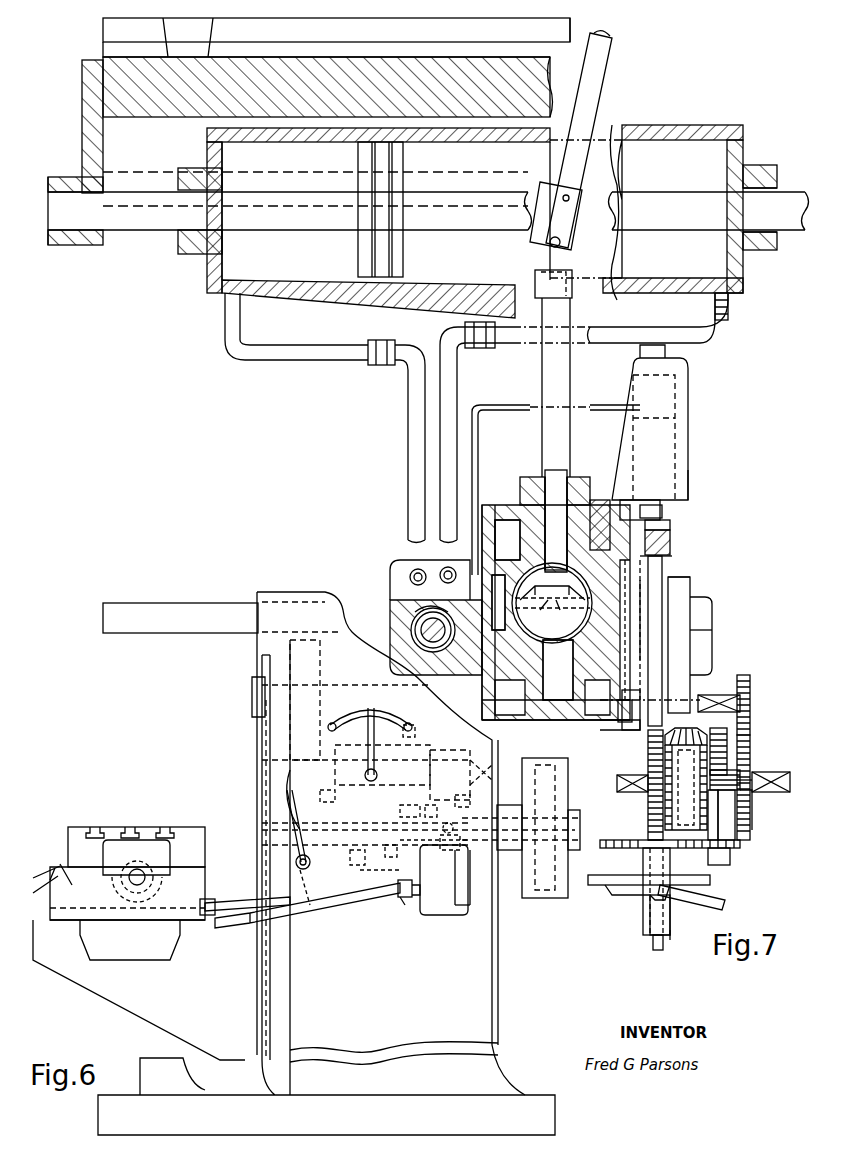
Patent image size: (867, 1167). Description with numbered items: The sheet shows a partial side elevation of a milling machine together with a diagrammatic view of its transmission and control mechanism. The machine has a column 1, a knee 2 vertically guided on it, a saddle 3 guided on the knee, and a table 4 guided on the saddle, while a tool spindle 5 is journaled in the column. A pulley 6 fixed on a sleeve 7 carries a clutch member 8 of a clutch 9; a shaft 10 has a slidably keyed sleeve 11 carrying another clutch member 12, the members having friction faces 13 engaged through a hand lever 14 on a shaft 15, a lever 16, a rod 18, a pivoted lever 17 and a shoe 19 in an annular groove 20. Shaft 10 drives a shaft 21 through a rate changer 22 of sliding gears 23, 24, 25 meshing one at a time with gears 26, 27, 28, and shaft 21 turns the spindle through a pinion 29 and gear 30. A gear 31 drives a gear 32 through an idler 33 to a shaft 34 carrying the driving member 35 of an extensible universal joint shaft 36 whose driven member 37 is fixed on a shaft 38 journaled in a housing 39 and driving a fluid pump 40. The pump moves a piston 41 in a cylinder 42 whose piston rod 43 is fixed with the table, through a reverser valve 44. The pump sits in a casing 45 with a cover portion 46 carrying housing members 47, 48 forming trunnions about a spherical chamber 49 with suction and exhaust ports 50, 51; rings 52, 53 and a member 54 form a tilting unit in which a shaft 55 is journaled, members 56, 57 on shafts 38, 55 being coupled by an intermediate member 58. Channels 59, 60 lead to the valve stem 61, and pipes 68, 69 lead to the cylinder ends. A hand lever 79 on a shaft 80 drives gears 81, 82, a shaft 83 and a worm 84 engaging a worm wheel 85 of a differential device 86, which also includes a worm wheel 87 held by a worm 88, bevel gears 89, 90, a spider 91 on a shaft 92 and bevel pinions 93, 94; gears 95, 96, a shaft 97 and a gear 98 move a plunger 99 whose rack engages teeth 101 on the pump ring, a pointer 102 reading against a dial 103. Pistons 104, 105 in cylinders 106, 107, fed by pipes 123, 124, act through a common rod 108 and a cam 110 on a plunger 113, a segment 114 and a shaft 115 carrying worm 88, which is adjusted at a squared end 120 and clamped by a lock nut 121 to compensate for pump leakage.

In FIG. 6, the column 1 is at (498, 985).
In FIG. 6, the knee 2 is at (112, 1002).
In FIG. 6, the saddle 3 is at (200, 890).
In FIG. 6, the table 4 is at (103, 30).
In FIG. 6, the tool spindle 5 is at (254, 700).
In FIG. 6, the pulley 6 is at (547, 898).
In FIG. 6, the sleeve 7 is at (534, 862).
In FIG. 6, the clutch member 8 is at (478, 800).
In FIG. 6, the clutch 9 is at (464, 770).
In FIG. 6, the shaft 10 is at (431, 845).
In FIG. 6, the sleeve 11 is at (436, 804).
In FIG. 6, the clutch member 12 is at (458, 794).
In FIG. 6, the friction faces 13 is at (489, 772).
In FIG. 6, the hand lever 14 is at (290, 803).
In FIG. 6, the shaft 15 is at (307, 829).
In FIG. 6, the lever 16 is at (305, 875).
In FIG. 6, the pivoted lever 17 is at (465, 872).
In FIG. 6, the rod 18 is at (393, 913).
In FIG. 6, the pivoted shoe 19 is at (455, 837).
In FIG. 6, the annular groove 20 is at (413, 804).
In FIG. 6, the shaft 21 is at (415, 760).
In FIG. 6, the rate changer 22 is at (345, 803).
In FIG. 6, the gear 23 is at (351, 863).
In FIG. 6, the gear 24 is at (379, 879).
In FIG. 6, the gear 25 is at (392, 857).
In FIG. 6, the gear 26 is at (370, 727).
In FIG. 6, the gear 27 is at (379, 744).
In FIG. 6, the gear 28 is at (410, 730).
In FIG. 6, the pinion 29 is at (301, 800).
In FIG. 6, the gear 30 is at (315, 668).
In FIG. 6, the gear 31 is at (432, 818).
In FIG. 6, the gear 32 is at (444, 886).
In FIG. 6, the idler 33 is at (408, 885).
In FIG. 6, the shaft 34 is at (470, 907).
In FIG. 6, the driving member 35 is at (415, 898).
In FIG. 6, the extensible universal joint shaft 36 is at (322, 913).
In FIG. 6, the driven member 37 is at (572, 280).
In FIG. 6, the shaft 38 is at (570, 370).
In FIG. 6, the housing 39 is at (58, 924).
In FIG. 6, the fluid pump 40 is at (506, 505).
In FIG. 6, the piston 41 is at (358, 252).
In FIG. 6, the cylinder 42 is at (336, 305).
In FIG. 6, the piston rod 43 is at (300, 232).
In FIG. 6, the reverser valve 44 is at (425, 610).
In FIG. 6, the casing 45 is at (480, 528).
In FIG. 6, the cover portion 46 is at (540, 480).
In FIG. 6, the pump housing member 47 is at (596, 505).
In FIG. 6, the pump housing member 48 is at (632, 698).
In FIG. 6, the spherical chamber 49 is at (557, 520).
In FIG. 6, the suction port 50 is at (640, 630).
In FIG. 6, the exhaust port 51 is at (505, 602).
In FIG. 6, the ring member 52 is at (480, 692).
In FIG. 6, the pump ring 53 is at (640, 505).
In FIG. 6, the member 54 is at (525, 686).
In FIG. 6, the shaft 55 is at (548, 700).
In FIG. 6, the member 56 is at (552, 602).
In FIG. 6, the member 57 is at (539, 618).
In FIG. 6, the intermediate member 58 is at (562, 618).
In FIG. 6, the channel 59 is at (647, 620).
In FIG. 6, the channel 60 is at (470, 672).
In FIG. 6, the valve stem 61 is at (415, 625).
In FIG. 6, the pipe 68 is at (702, 345).
In FIG. 6, the pipe 69 is at (282, 362).
In FIG. 7, the hand lever 79 is at (700, 905).
In FIG. 7, the shaft 80 is at (650, 920).
In FIG. 7, the gear 81 is at (630, 848).
In FIG. 7, the gear 82 is at (676, 848).
In FIG. 7, the shaft 83 is at (724, 866).
In FIG. 7, the worm 84 is at (752, 760).
In FIG. 7, the worm wheel 85 is at (735, 772).
In FIG. 7, the differential device 86 is at (752, 822).
In FIG. 7, the worm wheel 87 is at (648, 810).
In FIG. 7, the worm 88 is at (620, 782).
In FIG. 7, the bevel gear 89 is at (648, 750).
In FIG. 7, the bevel gear 90 is at (727, 745).
In FIG. 7, the spider 91 is at (735, 832).
In FIG. 7, the shaft 92 is at (780, 792).
In FIG. 7, the bevel pinion 93 is at (706, 735).
In FIG. 7, the bevel pinion 94 is at (718, 825).
In FIG. 7, the gear 95 is at (752, 808).
In FIG. 7, the gear 96 is at (750, 676).
In FIG. 7, the shaft 97 is at (722, 695).
In FIG. 6, the gear 98 is at (622, 722).
In FIG. 6, the plunger 99 is at (600, 700).
In FIG. 6, the teeth 101 is at (654, 641).
In FIG. 7, the pointer 102 is at (626, 895).
In FIG. 7, the dial 103 is at (594, 885).
In FIG. 6, the piston 104 is at (688, 472).
In FIG. 6, the piston 105 is at (692, 590).
In FIG. 6, the cylinder 106 is at (690, 490).
In FIG. 6, the cylinder 107 is at (702, 615).
In FIG. 6, the common rod 108 is at (670, 528).
In FIG. 6, the cam 110 is at (662, 511).
In FIG. 6, the plunger 113 is at (672, 556).
In FIG. 6, the segment 114 is at (672, 545).
In FIG. 6, the shaft 115 is at (698, 588).
In FIG. 7, the squared end 120 is at (658, 950).
In FIG. 7, the lock nut 121 is at (685, 941).
In FIG. 6, the pipe 123 is at (522, 405).
In FIG. 6, the pipe 124 is at (712, 630).